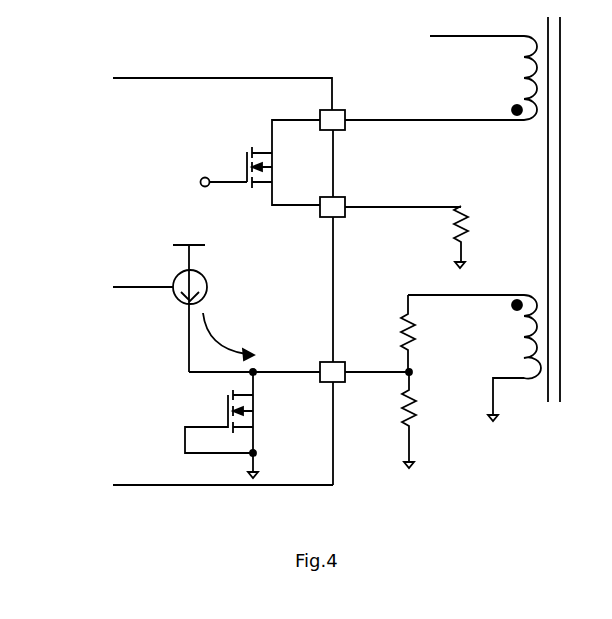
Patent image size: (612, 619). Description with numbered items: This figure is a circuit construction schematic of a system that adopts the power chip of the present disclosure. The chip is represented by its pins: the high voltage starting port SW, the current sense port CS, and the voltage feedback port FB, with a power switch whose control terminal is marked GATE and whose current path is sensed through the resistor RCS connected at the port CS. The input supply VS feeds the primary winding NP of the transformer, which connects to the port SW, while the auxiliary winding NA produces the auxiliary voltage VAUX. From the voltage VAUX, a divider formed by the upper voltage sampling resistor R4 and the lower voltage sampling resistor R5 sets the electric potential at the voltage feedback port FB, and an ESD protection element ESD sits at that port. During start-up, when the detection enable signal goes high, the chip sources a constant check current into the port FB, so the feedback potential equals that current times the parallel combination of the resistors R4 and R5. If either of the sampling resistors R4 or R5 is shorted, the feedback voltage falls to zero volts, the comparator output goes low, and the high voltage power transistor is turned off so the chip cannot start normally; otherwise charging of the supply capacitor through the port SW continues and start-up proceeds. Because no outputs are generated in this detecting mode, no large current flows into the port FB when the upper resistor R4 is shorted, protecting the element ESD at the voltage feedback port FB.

The high voltage starting port SW is at (308, 148).
The current sense pin CS is at (383, 197).
The voltage feedback port FB is at (300, 384).
The gate terminal of power switch GATE is at (208, 169).
The current sense resistor RCS is at (484, 237).
The input supply voltage VS is at (468, 35).
The primary winding NP is at (441, 78).
The auxiliary winding NA is at (514, 358).
The auxiliary voltage VAUX is at (461, 283).
The voltage sampling resistor R4 is at (430, 333).
The voltage sampling resistor R5 is at (431, 420).
The ESD protection at the voltage feedback port ESD is at (243, 425).